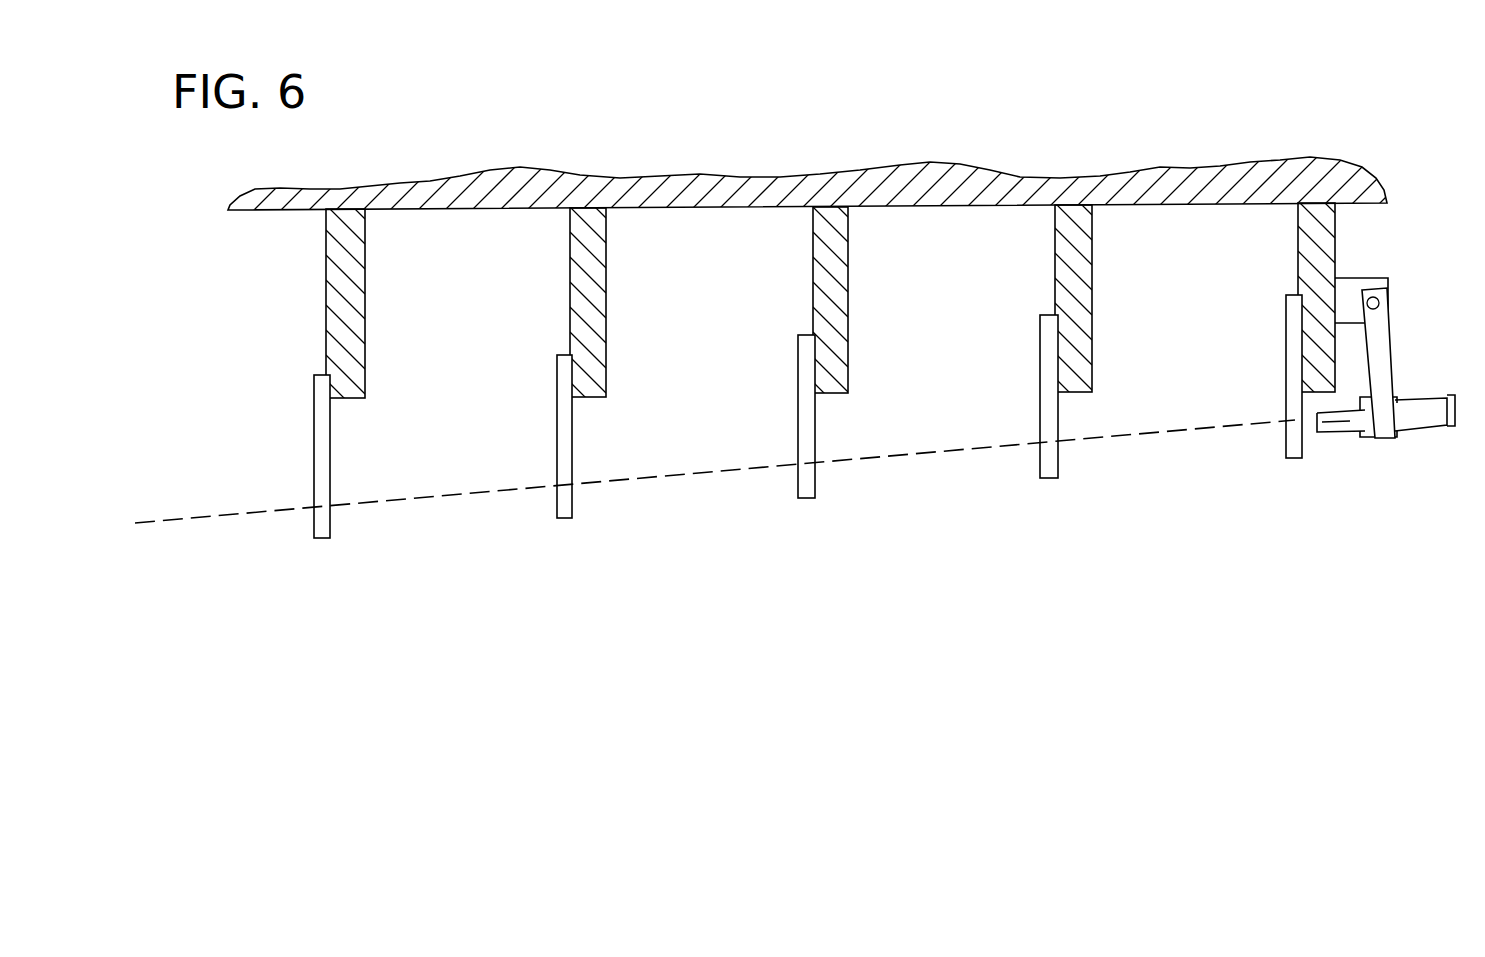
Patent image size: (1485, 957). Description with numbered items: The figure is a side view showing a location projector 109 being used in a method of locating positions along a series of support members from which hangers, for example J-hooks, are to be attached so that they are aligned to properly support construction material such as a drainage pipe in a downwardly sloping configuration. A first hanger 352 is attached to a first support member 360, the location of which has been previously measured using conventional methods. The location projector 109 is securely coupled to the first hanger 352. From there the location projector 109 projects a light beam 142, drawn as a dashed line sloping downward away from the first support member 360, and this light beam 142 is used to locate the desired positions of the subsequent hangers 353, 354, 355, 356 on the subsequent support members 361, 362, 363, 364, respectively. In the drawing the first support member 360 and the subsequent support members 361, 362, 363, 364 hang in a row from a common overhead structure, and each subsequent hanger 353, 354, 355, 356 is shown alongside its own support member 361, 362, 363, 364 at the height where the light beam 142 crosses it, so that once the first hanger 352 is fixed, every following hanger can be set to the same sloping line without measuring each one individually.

The location projector 109 is at (1418, 433).
The light beam 142 is at (705, 473).
The first hanger 352 is at (1286, 400).
The subsequent hanger 353 is at (1040, 413).
The subsequent hanger 354 is at (798, 425).
The subsequent hanger 355 is at (557, 443).
The subsequent hanger 356 is at (314, 447).
The first support member 360 is at (1298, 263).
The subsequent support member 361 is at (1055, 267).
The subsequent support member 362 is at (813, 268).
The subsequent support member 363 is at (570, 273).
The subsequent support member 364 is at (326, 276).